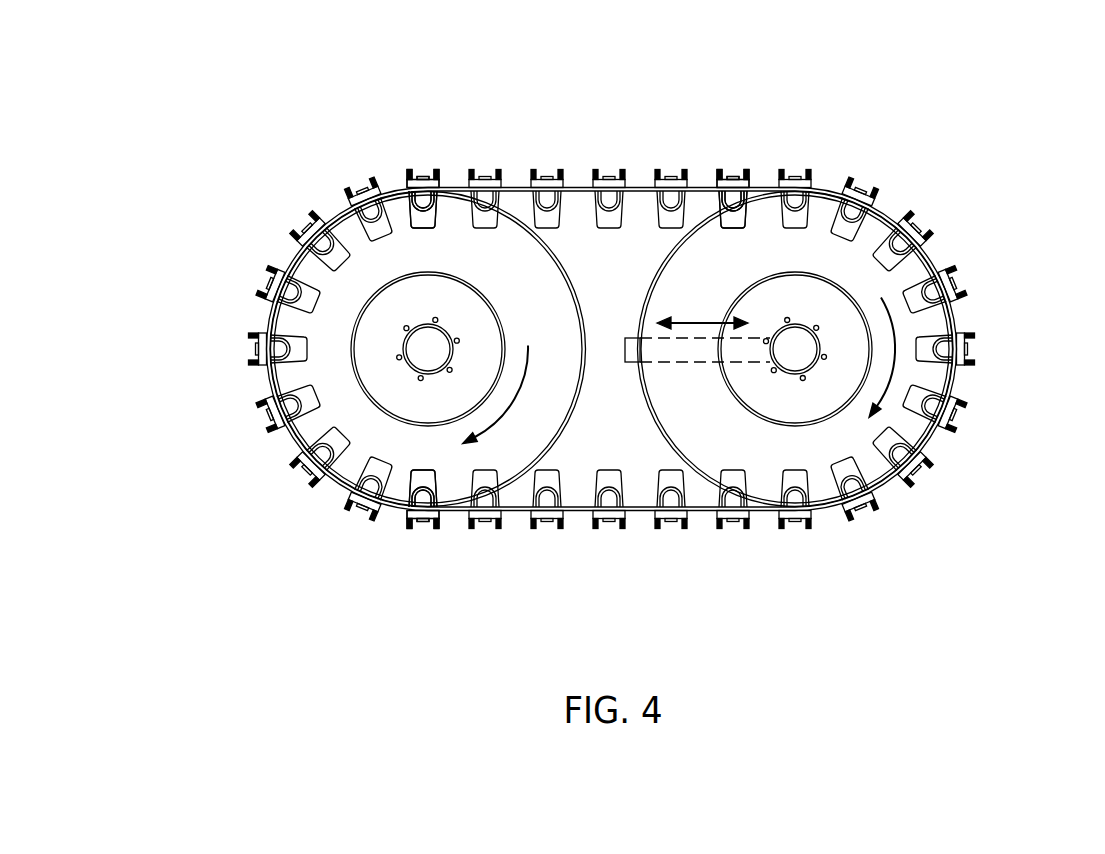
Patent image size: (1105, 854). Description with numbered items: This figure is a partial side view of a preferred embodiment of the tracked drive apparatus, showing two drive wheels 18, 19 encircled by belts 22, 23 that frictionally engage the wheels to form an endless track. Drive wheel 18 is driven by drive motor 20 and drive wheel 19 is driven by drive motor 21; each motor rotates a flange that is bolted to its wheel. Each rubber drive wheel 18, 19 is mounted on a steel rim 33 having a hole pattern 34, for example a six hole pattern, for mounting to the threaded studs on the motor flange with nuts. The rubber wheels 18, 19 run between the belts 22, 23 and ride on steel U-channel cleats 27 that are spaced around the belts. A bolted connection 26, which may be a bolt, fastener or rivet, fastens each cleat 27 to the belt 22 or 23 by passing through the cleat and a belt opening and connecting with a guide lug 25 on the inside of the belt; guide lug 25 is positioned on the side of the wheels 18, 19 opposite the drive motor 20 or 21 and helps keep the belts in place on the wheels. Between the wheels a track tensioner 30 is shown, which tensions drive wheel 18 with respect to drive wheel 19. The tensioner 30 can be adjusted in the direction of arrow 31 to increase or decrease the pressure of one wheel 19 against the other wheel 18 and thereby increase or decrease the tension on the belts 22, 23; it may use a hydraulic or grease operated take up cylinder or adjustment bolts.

The drive wheel 18 is at (508, 287).
The drive wheel 19 is at (743, 265).
The drive motor 20 is at (410, 370).
The drive motor 21 is at (802, 327).
The endless belt 22 is at (517, 188).
The endless belt 23 is at (612, 349).
The guide lug 25 is at (912, 290).
The bolted connection 26 is at (733, 182).
The cleat 27 is at (423, 186).
The track tensioner 30 is at (625, 345).
The arrow 31 is at (708, 320).
The steel rim 33 is at (367, 343).
The hole pattern 34 is at (435, 318).